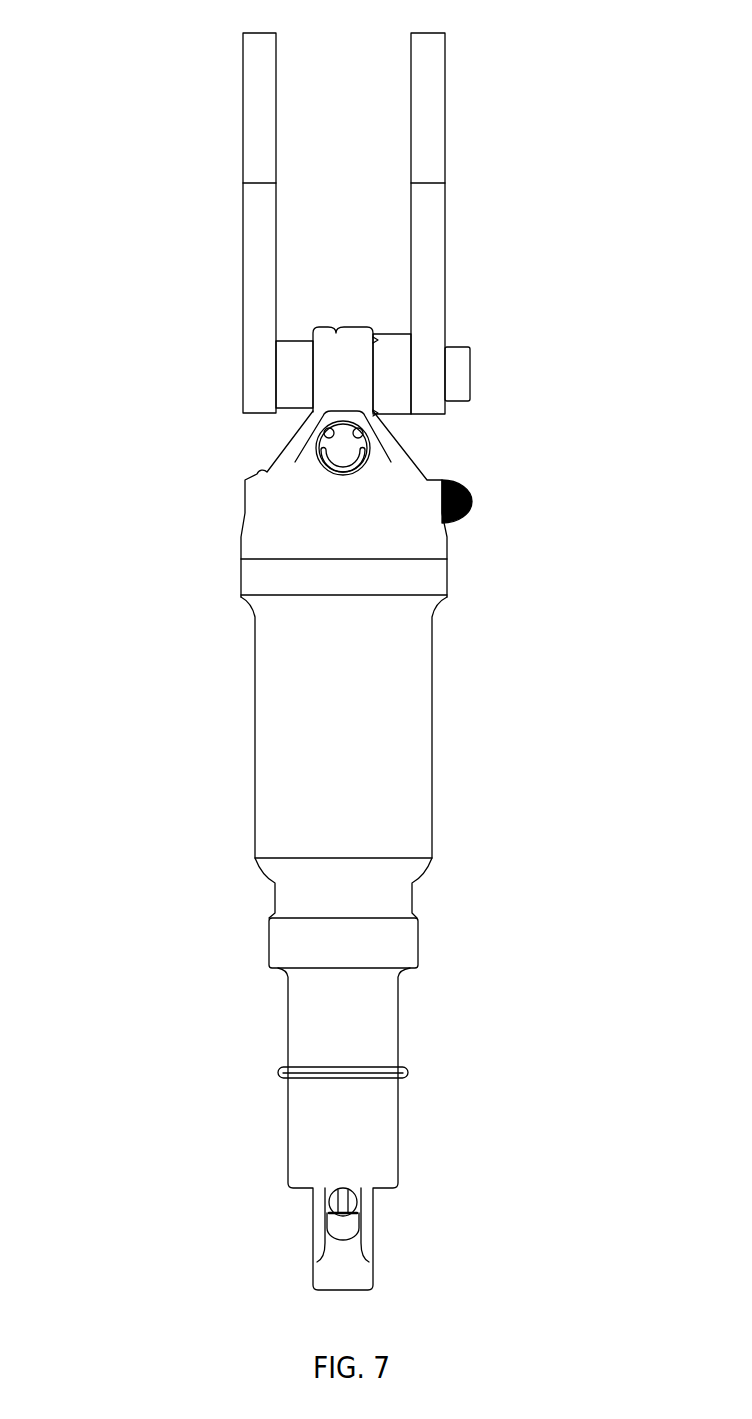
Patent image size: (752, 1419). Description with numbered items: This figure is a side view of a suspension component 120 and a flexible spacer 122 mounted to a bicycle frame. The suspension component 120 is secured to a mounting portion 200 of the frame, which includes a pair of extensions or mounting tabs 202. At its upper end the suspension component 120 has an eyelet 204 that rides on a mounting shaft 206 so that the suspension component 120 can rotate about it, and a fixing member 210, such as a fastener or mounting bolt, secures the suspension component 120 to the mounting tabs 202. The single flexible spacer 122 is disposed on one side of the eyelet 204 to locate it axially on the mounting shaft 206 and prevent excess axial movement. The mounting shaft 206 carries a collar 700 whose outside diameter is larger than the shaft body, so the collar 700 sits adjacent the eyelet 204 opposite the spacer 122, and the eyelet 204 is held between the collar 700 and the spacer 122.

The mounting portion 200 is at (203, 56).
The mounting tabs 202 is at (248, 160).
The collar 700 is at (293, 358).
The flexible spacer 122 is at (395, 358).
The fixing member 210 is at (458, 375).
The eyelet 204 is at (336, 357).
The mounting shaft 206 is at (272, 437).
The suspension component 120 is at (248, 585).